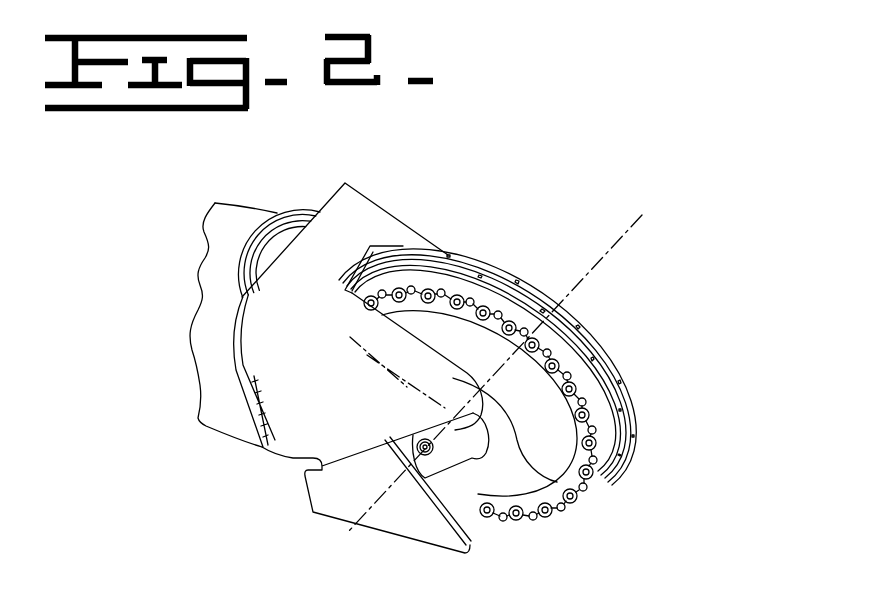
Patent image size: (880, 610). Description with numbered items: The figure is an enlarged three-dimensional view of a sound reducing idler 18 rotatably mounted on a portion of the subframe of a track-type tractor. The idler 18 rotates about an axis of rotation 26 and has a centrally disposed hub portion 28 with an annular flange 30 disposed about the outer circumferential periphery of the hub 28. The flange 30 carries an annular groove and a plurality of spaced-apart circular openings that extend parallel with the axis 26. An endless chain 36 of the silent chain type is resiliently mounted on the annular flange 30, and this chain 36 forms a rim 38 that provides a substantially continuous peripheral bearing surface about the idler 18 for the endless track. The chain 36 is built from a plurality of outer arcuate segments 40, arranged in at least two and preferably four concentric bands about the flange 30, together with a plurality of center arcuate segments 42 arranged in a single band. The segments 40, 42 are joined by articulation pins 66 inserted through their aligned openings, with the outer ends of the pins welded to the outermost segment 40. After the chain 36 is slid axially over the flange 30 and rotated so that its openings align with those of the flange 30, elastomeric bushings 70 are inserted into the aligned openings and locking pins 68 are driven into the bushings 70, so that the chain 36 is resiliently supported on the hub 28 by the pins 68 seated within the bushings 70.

The sound reducing idler 18 is at (565, 363).
The axis of rotation 26 is at (640, 258).
The hub portion 28 is at (497, 425).
The annular flange 30 is at (582, 498).
The endless chain 36 is at (542, 337).
The rim 38 is at (603, 442).
The outer arcuate segments 40 is at (552, 282).
The center arcuate segments 42 is at (463, 262).
The articulation pin 66 is at (627, 390).
The locking pins 68 is at (435, 292).
The elastomeric bushings 70 is at (392, 292).